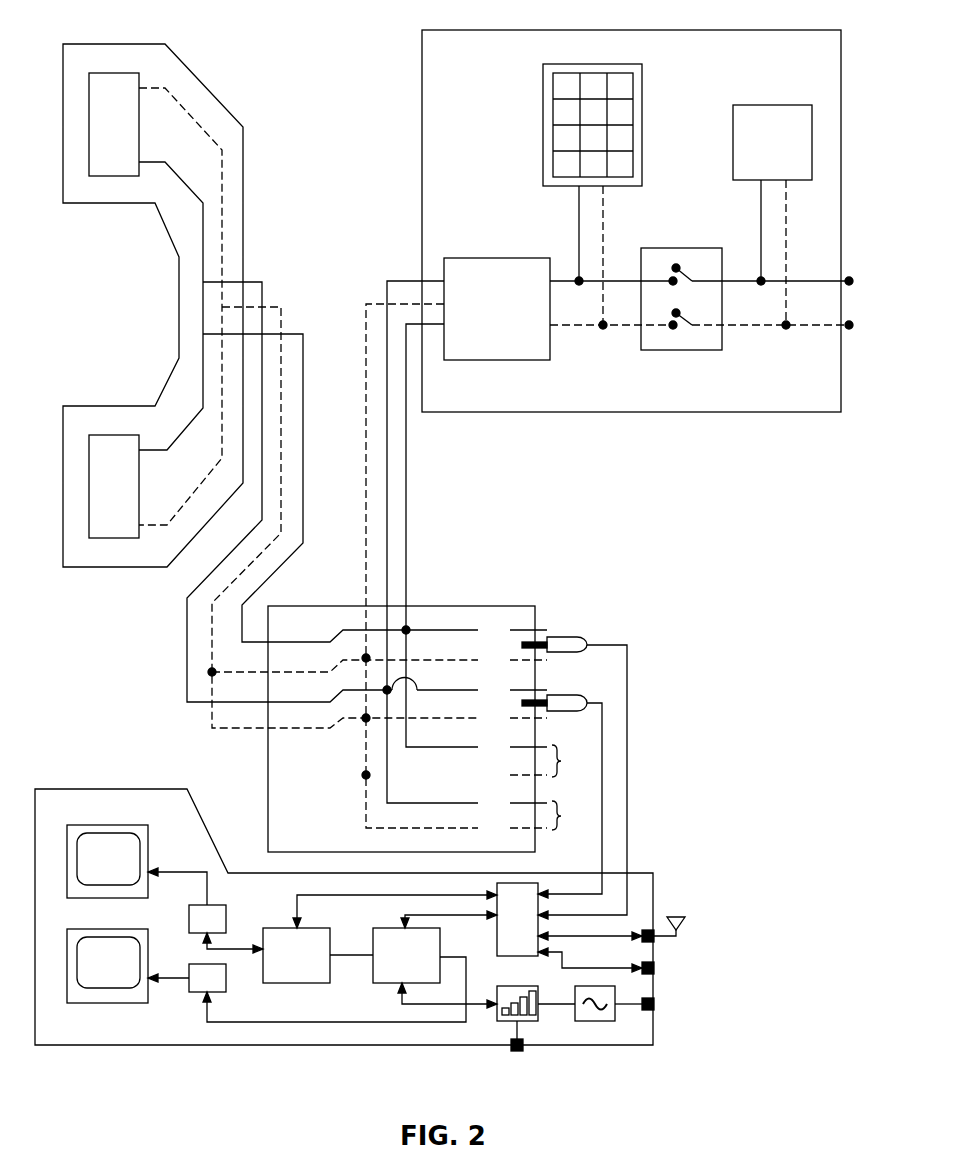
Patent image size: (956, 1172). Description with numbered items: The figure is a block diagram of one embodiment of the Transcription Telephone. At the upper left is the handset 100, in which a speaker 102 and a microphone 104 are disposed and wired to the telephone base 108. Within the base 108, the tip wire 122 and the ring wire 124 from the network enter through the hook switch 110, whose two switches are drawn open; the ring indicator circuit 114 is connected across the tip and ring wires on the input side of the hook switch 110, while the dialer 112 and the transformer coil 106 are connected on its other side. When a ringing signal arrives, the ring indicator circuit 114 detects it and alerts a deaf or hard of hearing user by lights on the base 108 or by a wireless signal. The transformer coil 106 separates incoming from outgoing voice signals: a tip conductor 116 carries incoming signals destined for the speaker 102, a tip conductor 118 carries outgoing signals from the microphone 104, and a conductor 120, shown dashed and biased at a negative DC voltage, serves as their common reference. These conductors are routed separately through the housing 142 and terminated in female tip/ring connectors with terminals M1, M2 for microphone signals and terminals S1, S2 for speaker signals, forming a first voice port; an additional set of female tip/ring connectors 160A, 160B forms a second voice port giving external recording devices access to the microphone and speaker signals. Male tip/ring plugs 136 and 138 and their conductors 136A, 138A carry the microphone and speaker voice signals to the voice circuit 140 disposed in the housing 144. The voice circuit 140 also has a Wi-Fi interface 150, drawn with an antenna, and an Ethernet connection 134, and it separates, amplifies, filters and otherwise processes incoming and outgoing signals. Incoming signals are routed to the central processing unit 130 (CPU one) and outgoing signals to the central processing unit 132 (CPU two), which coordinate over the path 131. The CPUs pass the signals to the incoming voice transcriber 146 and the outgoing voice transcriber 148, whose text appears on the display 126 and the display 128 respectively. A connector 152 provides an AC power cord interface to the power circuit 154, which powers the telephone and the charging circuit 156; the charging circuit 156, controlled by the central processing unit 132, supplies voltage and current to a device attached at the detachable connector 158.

The handset 100 is at (210, 92).
The speaker 102 is at (97, 73).
The microphone 104 is at (97, 538).
The transformer coil 106 is at (492, 258).
The telephone base 108 is at (672, 30).
The hook switch 110 is at (670, 248).
The dialer 112 is at (597, 64).
The ring indicator circuit 114 is at (767, 105).
The tip conductor for incoming signals 116 is at (402, 278).
The tip conductor for outgoing signals 118 is at (408, 490).
The reference conductor 120 is at (363, 455).
The tip wire 122 is at (748, 283).
The ring wire 124 is at (758, 328).
The display 126 is at (97, 825).
The display 128 is at (98, 1003).
The central processing unit 130 is at (313, 928).
The path 131 is at (352, 957).
The central processing unit 132 is at (442, 947).
The Ethernet connection 134 is at (656, 974).
The male tip/ring plug 136 is at (570, 637).
The conductor 136A is at (629, 775).
The male tip/ring plug 138 is at (570, 695).
The conductor 138A is at (602, 842).
The voice circuit 140 is at (520, 957).
The housing 142 is at (457, 606).
The housing 144 is at (637, 873).
The incoming voice transcriber 146 is at (218, 905).
The outgoing voice transcriber 148 is at (218, 992).
The Wi-Fi interface 150 is at (656, 942).
The connector 152 is at (656, 1010).
The power circuit 154 is at (600, 1022).
The charging circuit 156 is at (530, 1022).
The connector 158 is at (514, 1051).
The second voice port terminals 160A is at (574, 761).
The second voice port terminals 160B is at (574, 815).
The microphone terminal M1 is at (268, 580).
The microphone terminal M2 is at (214, 670).
The speaker terminal S1 is at (187, 639).
The speaker terminal S2 is at (232, 728).